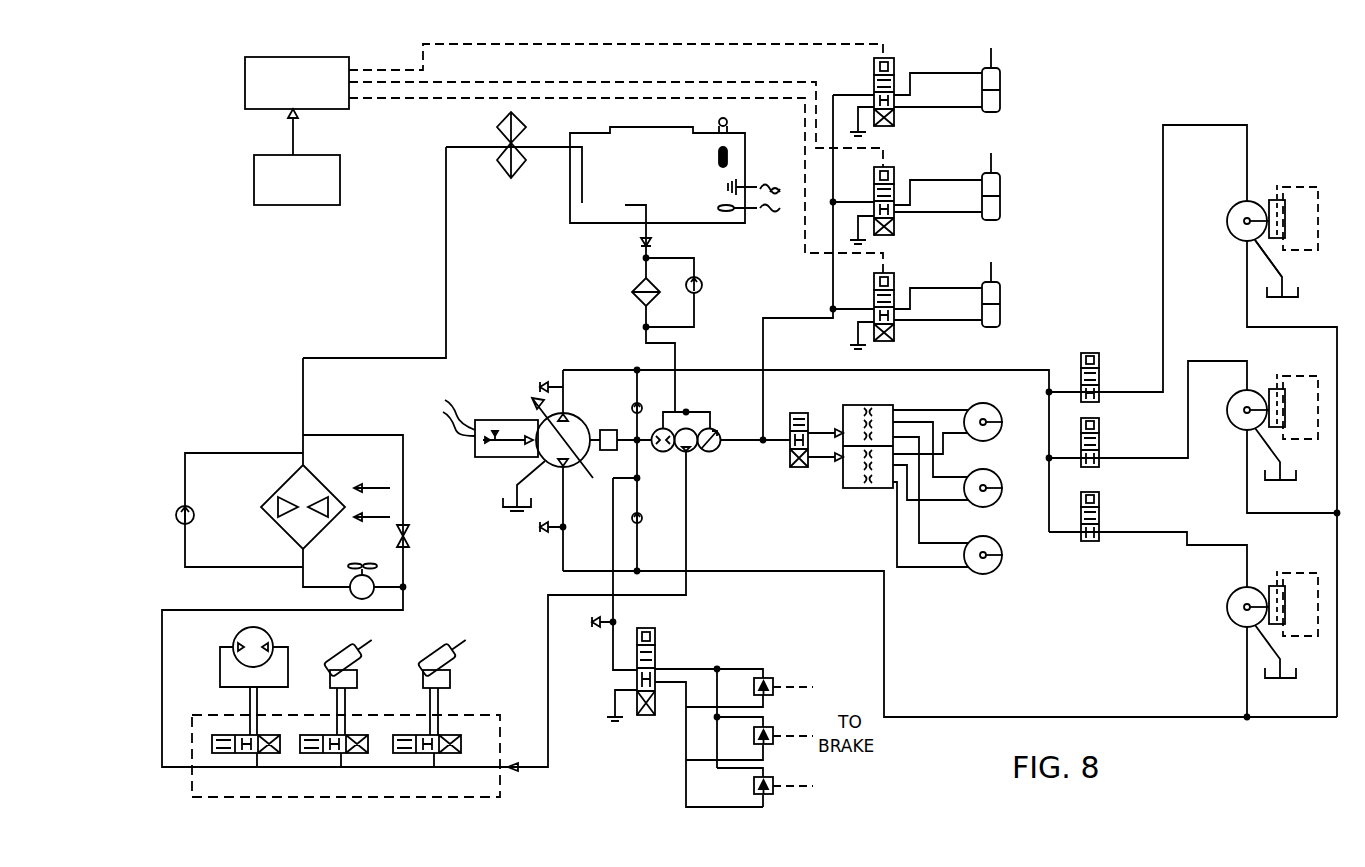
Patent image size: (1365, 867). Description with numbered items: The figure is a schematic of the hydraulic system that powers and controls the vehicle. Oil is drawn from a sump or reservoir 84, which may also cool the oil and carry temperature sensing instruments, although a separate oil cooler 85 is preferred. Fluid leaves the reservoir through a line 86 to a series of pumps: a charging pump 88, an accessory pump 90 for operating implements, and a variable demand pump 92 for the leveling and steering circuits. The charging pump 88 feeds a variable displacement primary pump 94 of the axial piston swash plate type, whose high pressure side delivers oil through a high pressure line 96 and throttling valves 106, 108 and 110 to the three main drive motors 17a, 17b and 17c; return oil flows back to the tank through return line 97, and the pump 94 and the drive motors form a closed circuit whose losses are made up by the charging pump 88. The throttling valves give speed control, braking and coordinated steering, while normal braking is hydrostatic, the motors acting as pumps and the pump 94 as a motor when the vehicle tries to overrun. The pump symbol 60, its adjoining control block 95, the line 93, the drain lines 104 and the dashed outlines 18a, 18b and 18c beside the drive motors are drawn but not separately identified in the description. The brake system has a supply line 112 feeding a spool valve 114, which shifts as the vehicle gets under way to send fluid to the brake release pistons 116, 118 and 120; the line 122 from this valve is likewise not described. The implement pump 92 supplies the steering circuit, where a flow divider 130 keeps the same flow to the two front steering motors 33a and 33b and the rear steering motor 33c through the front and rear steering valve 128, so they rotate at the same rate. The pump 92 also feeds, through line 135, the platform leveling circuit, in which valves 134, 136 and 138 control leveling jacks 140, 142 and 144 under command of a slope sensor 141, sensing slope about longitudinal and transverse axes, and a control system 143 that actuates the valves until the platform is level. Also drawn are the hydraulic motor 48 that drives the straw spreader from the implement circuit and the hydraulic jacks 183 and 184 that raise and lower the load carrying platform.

The control system 143 is at (343, 57).
The slope sensor 141 is at (337, 155).
The sump or reservoir 84 is at (648, 145).
The valve 134 is at (874, 80).
The valve 136 is at (874, 187).
The valve 138 is at (894, 282).
The leveling jack 140 is at (1000, 71).
The leveling jack 142 is at (1000, 176).
The leveling jack 144 is at (1000, 284).
The line 135 is at (790, 318).
The line 86 is at (646, 336).
The high pressure line 96 is at (716, 370).
The variable displacement pump 60 is at (542, 458).
The variable displacement primary pump 94 is at (572, 415).
The pump control 95 is at (520, 420).
The charging pump 88 is at (662, 452).
The accessory pump 90 is at (690, 426).
The variable demand pump 92 is at (697, 476).
The line 93 is at (738, 442).
The front and rear steering valve 128 is at (800, 413).
The flow divider 130 is at (868, 405).
The front steering motor 33a is at (979, 406).
The front steering motor 33b is at (979, 472).
The rear steering motor 33c is at (979, 539).
The throttling valve 106 is at (1099, 372).
The throttling valve 108 is at (1099, 438).
The throttling valve 110 is at (1099, 503).
The main drive motor 17a is at (1230, 210).
The main drive motor 17b is at (1240, 396).
The main drive motor 17c is at (1232, 601).
The wheel 18a is at (1278, 190).
The wheel 18b is at (1282, 378).
The wheel 18c is at (1282, 575).
The case drain line 104 is at (1277, 262).
The oil cooler 85 is at (411, 537).
The hydraulic motor 48 is at (236, 633).
The hydraulic jack 183 is at (328, 663).
The hydraulic jack 184 is at (424, 663).
The supply line 112 is at (613, 658).
The spool valve 114 is at (655, 646).
The brake release piston 116 is at (773, 680).
The brake release piston 118 is at (773, 731).
The brake release piston 120 is at (773, 782).
The brake line 122 is at (728, 807).
The return line 97 is at (884, 641).